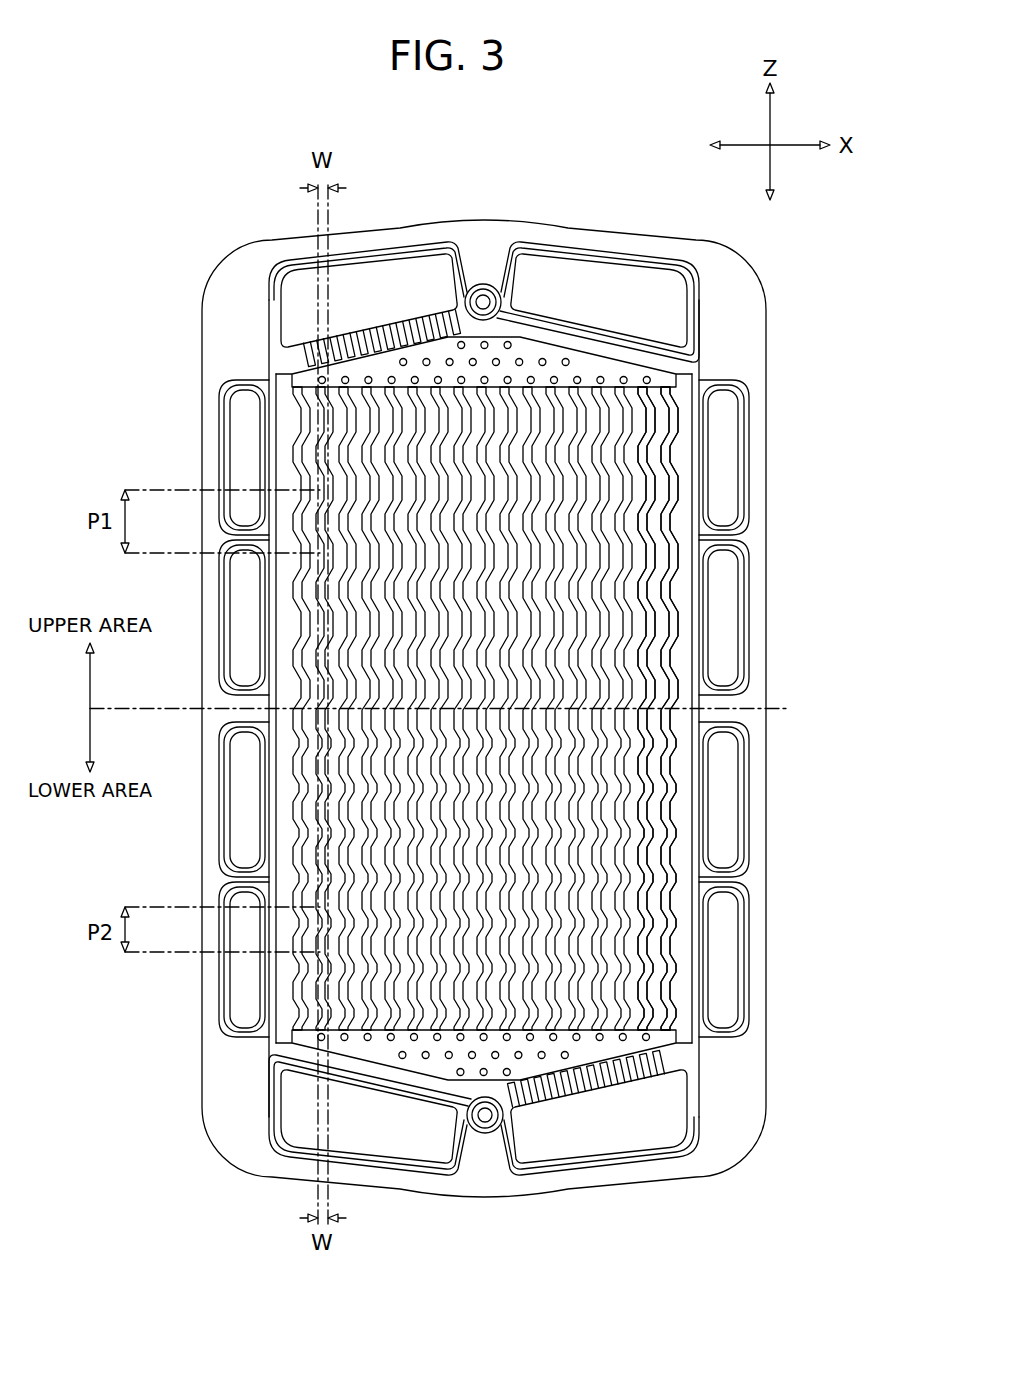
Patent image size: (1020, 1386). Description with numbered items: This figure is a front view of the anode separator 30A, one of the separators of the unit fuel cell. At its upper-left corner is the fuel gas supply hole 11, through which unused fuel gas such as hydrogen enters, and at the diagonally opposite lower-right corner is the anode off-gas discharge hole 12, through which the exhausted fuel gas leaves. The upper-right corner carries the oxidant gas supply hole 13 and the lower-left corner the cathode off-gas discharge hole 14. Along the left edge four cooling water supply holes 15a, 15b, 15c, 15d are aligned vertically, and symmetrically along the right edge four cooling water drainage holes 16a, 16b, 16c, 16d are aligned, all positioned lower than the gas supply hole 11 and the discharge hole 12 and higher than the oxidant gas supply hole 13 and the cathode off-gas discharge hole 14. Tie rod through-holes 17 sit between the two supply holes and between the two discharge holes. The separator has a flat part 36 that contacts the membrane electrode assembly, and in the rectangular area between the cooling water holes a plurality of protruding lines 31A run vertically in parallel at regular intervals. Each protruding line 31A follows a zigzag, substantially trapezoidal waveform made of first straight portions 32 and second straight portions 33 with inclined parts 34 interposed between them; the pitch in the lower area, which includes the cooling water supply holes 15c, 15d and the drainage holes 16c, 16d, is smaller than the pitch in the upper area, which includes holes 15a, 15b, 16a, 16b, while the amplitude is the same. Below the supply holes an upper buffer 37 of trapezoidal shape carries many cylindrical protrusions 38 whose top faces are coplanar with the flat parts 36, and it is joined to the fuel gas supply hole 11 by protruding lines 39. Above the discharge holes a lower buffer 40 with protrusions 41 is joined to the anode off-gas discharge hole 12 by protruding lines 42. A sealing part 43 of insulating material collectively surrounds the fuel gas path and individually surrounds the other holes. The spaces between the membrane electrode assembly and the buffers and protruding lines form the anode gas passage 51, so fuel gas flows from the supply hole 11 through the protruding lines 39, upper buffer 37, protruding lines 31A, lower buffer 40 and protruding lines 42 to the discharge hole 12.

The anode separator 30A is at (219, 190).
The fuel gas supply hole 11 is at (400, 270).
The anode off-gas discharge hole 12 is at (586, 1150).
The oxidant gas supply hole 13 is at (598, 273).
The cathode off-gas discharge hole 14 is at (290, 1140).
The cooling water supply hole 15a is at (240, 412).
The cooling water supply hole 15b is at (240, 576).
The cooling water supply hole 15c is at (240, 838).
The cooling water supply hole 15d is at (240, 988).
The cooling water drainage hole 16a is at (726, 467).
The cooling water drainage hole 16b is at (726, 647).
The cooling water drainage hole 16c is at (726, 858).
The cooling water drainage hole 16d is at (726, 958).
The tie rod through-hole 17 is at (483, 298).
The protruding line 31A is at (575, 708).
The first straight portion 32 is at (672, 588).
The second straight portion 33 is at (675, 621).
The inclined part 34 is at (672, 603).
The flat part 36 is at (278, 458).
The upper buffer 37 is at (596, 370).
The protrusion 38 is at (542, 360).
The protruding line 39 is at (416, 312).
The lower buffer 40 is at (383, 1050).
The protrusion 41 is at (433, 1062).
The protruding line 42 is at (532, 1086).
The sealing part 43 is at (700, 1082).
The anode gas passage 51 is at (674, 422).